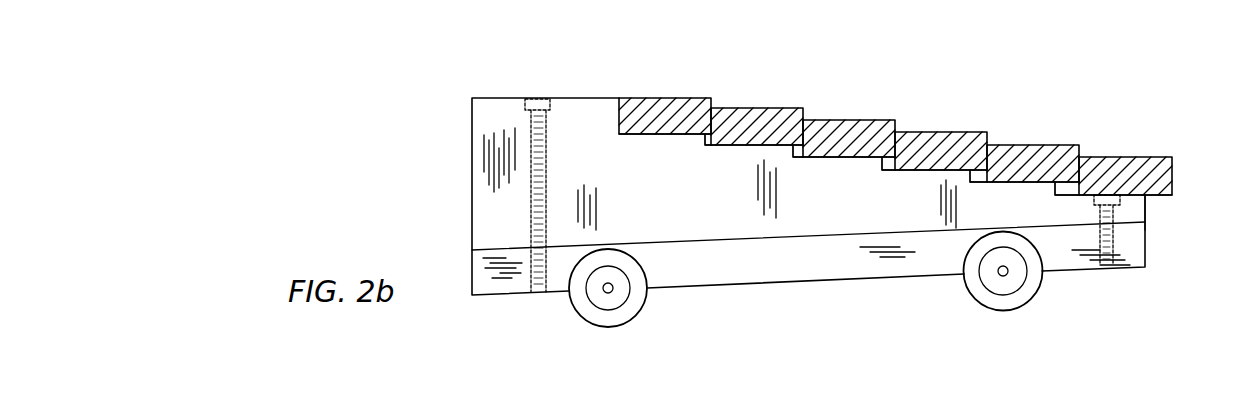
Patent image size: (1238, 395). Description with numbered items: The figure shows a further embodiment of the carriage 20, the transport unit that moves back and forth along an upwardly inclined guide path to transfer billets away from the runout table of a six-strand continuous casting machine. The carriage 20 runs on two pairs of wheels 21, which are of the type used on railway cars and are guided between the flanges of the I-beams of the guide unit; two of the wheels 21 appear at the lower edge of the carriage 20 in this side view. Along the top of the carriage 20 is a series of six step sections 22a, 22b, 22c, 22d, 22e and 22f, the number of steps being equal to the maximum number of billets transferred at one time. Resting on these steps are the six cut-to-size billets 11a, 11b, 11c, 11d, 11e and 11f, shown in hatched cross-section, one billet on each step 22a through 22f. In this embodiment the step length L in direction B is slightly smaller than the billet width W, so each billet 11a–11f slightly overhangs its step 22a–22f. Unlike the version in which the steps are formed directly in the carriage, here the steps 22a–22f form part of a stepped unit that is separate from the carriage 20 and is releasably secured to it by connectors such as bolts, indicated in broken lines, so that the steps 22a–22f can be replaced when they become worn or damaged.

The carriage 20 is at (483, 90).
The billet 11a is at (663, 104).
The billet 11b is at (745, 113).
The billet 11c is at (828, 125).
The billet 11d is at (925, 137).
The billet 11e is at (1022, 150).
The billet 11f is at (1125, 162).
The step section 22a is at (668, 136).
The step section 22b is at (757, 147).
The step section 22c is at (848, 158).
The step section 22d is at (940, 171).
The step section 22e is at (1028, 183).
The step section 22f is at (1148, 198).
The wheel 21 is at (632, 306).